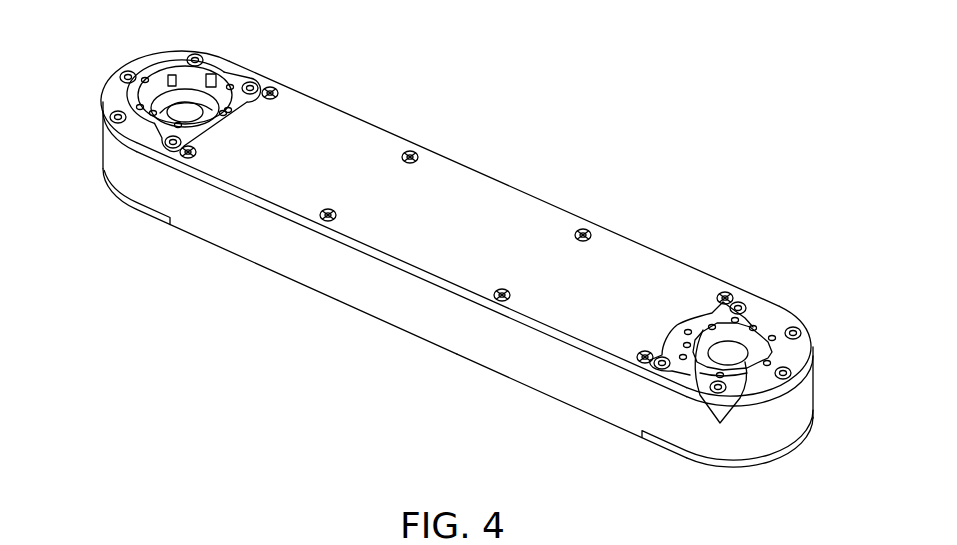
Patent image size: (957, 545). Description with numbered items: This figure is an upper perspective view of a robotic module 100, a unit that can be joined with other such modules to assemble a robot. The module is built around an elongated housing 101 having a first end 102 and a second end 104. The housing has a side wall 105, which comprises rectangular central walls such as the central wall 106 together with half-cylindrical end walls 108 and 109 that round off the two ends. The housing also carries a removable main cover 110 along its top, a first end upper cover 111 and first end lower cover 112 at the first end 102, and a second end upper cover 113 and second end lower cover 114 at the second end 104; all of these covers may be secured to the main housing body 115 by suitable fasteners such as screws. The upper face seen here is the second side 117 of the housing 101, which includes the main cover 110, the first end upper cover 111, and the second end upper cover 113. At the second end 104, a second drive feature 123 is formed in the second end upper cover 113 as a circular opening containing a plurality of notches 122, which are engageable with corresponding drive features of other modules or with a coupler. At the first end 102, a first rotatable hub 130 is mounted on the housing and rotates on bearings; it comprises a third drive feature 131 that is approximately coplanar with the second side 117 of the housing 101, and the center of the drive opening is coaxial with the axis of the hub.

The robotic module 100 is at (602, 138).
The elongated housing 101 is at (337, 315).
The first end 102 is at (103, 170).
The second end 104 is at (787, 453).
The side wall 105 is at (203, 222).
The rectangular central wall 106 is at (395, 305).
The half-cylindrical end wall 108 is at (110, 142).
The half-cylindrical end wall 109 is at (788, 405).
The removable main cover 110 is at (355, 137).
The first end upper cover 111 is at (457, 355).
The first end lower cover 112 is at (127, 203).
The second end upper cover 113 is at (778, 320).
The second end lower cover 114 is at (697, 460).
The main housing body 115 is at (557, 410).
The second side 117 is at (643, 230).
The notch 122 is at (721, 391).
The second drive feature 123 is at (789, 348).
The first rotatable hub 130 is at (230, 65).
The third drive feature 131 is at (185, 78).